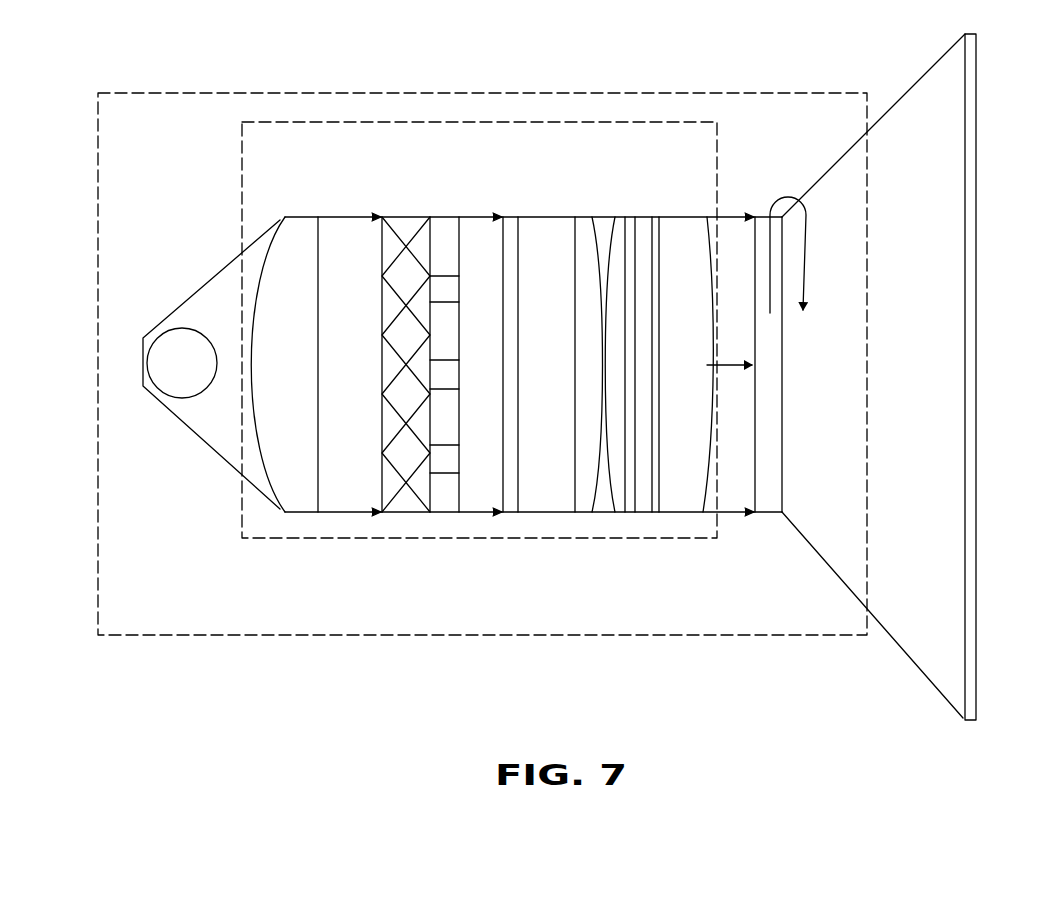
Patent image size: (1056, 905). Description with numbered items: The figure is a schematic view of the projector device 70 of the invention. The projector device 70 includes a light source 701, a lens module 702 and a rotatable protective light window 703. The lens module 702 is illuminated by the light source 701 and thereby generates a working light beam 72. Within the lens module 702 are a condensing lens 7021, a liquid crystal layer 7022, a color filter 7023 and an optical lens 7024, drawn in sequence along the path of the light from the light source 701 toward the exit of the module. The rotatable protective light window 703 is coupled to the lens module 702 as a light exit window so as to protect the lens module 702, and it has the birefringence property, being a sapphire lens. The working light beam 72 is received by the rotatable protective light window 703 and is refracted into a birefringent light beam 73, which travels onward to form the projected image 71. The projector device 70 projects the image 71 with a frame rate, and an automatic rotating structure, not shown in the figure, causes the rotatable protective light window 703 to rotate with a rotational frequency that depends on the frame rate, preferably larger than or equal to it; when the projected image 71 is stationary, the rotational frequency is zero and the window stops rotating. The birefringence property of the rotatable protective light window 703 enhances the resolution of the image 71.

The projector device 70 is at (414, 93).
The light source 701 is at (170, 328).
The lens module 702 is at (242, 489).
The condensing lens 7021 is at (296, 217).
The liquid crystal layer 7022 is at (400, 217).
The color filter 7023 is at (445, 512).
The optical lens 7024 is at (542, 217).
The rotatable protective light window 703 is at (770, 512).
The image 71 is at (968, 247).
The working light beam 72 is at (725, 217).
The birefringent light beam 73 is at (912, 90).